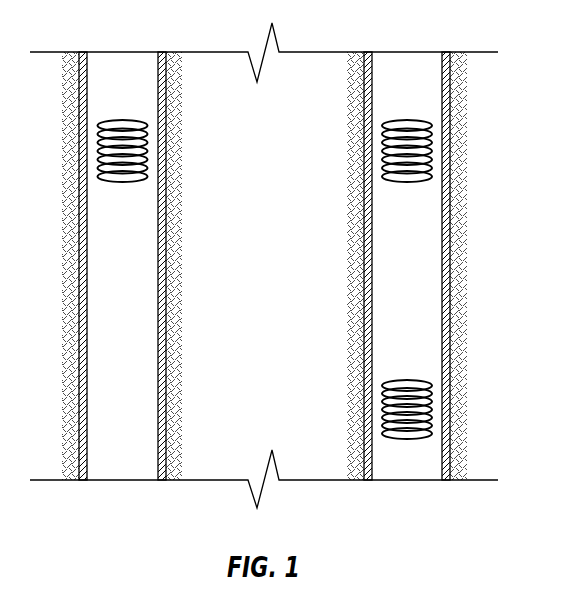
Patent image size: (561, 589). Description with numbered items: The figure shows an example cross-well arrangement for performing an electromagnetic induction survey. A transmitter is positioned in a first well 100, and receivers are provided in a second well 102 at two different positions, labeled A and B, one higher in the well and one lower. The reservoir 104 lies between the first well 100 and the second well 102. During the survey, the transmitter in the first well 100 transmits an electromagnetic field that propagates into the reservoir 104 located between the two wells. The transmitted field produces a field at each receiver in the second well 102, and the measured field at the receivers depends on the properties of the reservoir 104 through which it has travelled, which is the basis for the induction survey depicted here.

The first well 100 is at (165, 268).
The second well 102 is at (365, 268).
The reservoir 104 is at (285, 175).